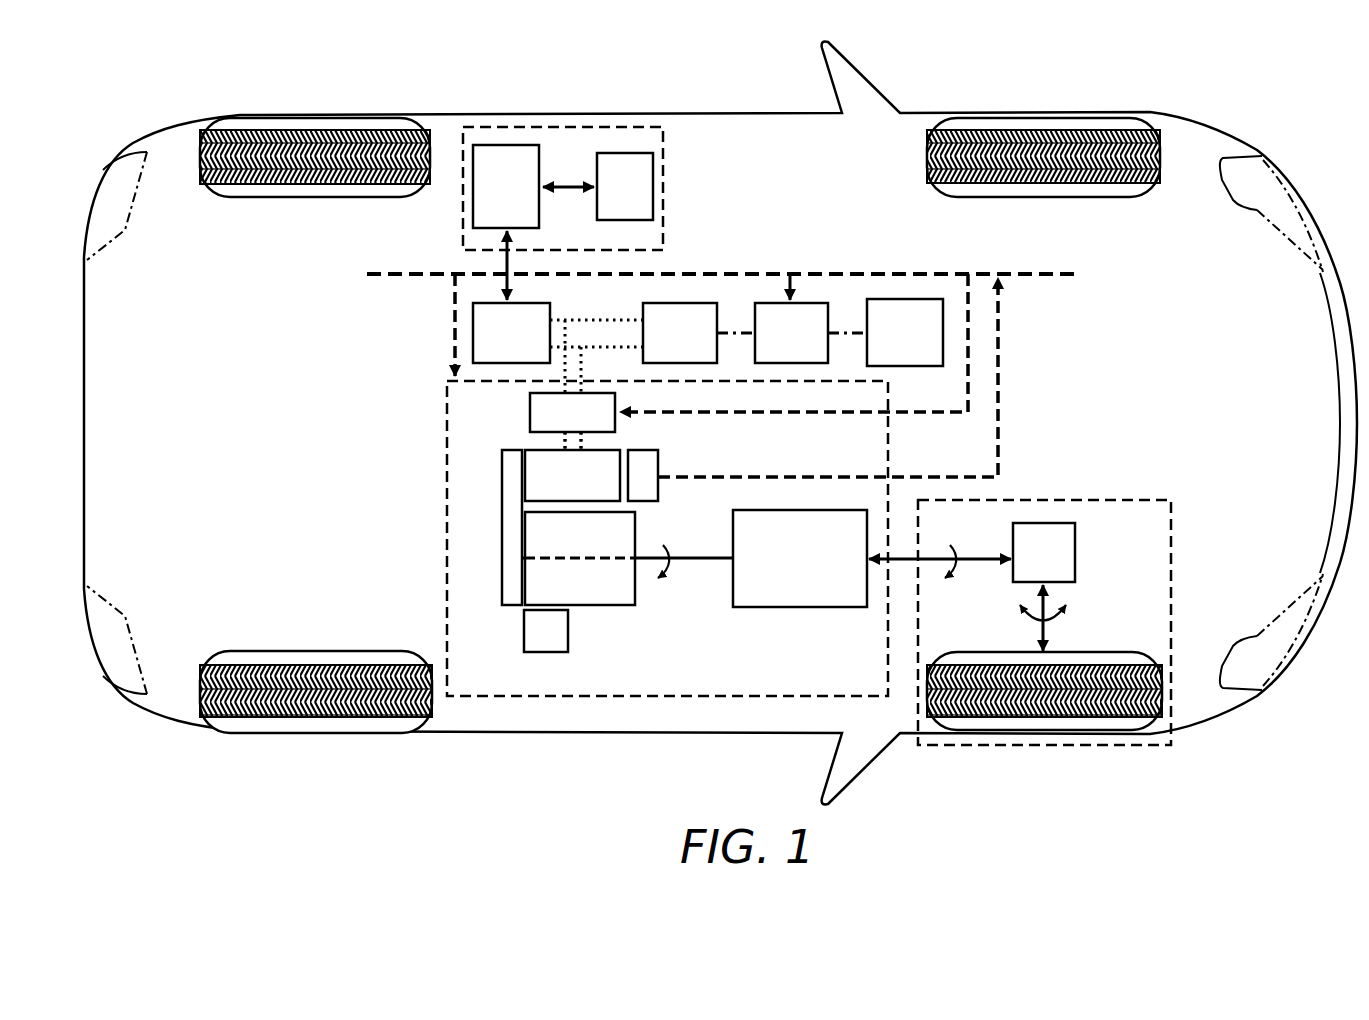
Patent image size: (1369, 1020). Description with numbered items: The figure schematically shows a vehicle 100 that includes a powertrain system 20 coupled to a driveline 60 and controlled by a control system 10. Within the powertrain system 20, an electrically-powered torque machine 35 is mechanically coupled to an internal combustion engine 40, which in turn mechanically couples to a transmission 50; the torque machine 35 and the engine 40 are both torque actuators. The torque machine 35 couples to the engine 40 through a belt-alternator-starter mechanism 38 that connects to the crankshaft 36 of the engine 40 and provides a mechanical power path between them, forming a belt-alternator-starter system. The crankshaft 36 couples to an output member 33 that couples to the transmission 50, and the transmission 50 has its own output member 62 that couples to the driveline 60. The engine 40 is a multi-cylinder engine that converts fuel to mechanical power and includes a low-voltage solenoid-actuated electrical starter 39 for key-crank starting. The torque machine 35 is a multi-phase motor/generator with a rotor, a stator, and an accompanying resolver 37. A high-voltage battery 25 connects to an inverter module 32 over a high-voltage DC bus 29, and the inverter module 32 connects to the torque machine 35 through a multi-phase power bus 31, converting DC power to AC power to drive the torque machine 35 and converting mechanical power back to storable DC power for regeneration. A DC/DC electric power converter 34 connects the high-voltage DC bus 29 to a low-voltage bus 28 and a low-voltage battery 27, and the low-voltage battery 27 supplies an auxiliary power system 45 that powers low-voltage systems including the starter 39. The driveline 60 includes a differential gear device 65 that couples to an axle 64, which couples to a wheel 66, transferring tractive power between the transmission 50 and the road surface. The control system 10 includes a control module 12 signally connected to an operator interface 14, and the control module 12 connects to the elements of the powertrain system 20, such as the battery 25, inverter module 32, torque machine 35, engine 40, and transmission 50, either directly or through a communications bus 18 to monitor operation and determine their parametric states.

The vehicle 100 is at (720, 423).
The control system 10 is at (577, 164).
The control module 12 is at (521, 203).
The operator interface 14 is at (640, 203).
The communications bus 18 is at (372, 266).
The powertrain system 20 is at (896, 451).
The high-voltage battery 25 is at (526, 349).
The low-voltage battery 27 is at (806, 349).
The low-voltage bus 28 is at (740, 332).
The high-voltage DC bus 29 is at (588, 352).
The multi-phase power bus 31 is at (565, 440).
The inverter module 32 is at (587, 428).
The output member 33 is at (682, 561).
The DC/DC electric power converter 34 is at (695, 349).
The electrically-powered torque machine 35 is at (587, 491).
The crankshaft 36 is at (597, 561).
The resolver 37 is at (641, 452).
The belt-alternator-starter mechanism 38 is at (502, 528).
The low-voltage solenoid-actuated electrical starter 39 is at (545, 654).
The internal combustion engine 40 is at (595, 597).
The auxiliary power system 45 is at (920, 349).
The transmission 50 is at (815, 574).
The driveline 60 is at (1118, 494).
The output member 62 is at (907, 556).
The axle 64 is at (1049, 604).
The differential gear device 65 is at (1059, 565).
The wheel 66 is at (1081, 652).